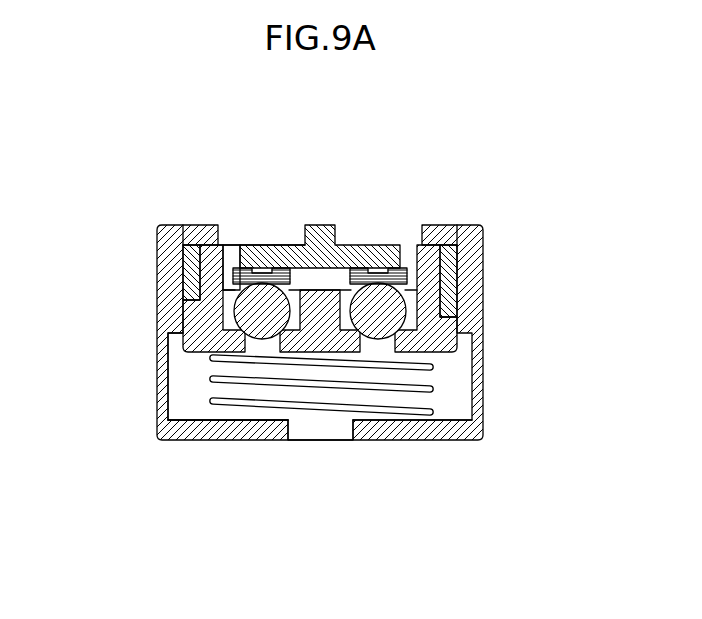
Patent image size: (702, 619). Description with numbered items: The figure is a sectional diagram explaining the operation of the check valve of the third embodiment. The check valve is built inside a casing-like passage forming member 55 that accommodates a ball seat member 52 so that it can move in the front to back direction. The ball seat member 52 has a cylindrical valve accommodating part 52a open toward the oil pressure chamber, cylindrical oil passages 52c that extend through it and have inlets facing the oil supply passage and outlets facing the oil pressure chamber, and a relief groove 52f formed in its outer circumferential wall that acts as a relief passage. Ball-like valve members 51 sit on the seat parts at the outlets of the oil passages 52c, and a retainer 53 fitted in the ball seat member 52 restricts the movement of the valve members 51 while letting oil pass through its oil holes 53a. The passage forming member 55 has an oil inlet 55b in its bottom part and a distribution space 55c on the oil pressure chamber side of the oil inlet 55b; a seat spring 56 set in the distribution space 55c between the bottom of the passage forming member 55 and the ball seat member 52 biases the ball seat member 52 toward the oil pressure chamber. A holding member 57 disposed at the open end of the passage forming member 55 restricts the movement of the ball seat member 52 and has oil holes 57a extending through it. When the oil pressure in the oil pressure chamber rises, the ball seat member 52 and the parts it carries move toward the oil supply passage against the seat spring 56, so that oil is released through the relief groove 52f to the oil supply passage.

The valve members 51 is at (183, 332).
The ball seat member 52 is at (458, 364).
The valve accommodating part 52a is at (200, 305).
The oil passages 52c is at (203, 357).
The relief groove 52f is at (450, 273).
The retainer 53 is at (388, 250).
The oil holes 53a is at (230, 257).
The passage forming member 55 is at (483, 440).
The oil inlet 55b is at (310, 432).
The distribution space 55c is at (218, 413).
The seat spring 56 is at (213, 379).
The holding member 57 is at (320, 225).
The oil holes 57a is at (262, 232).